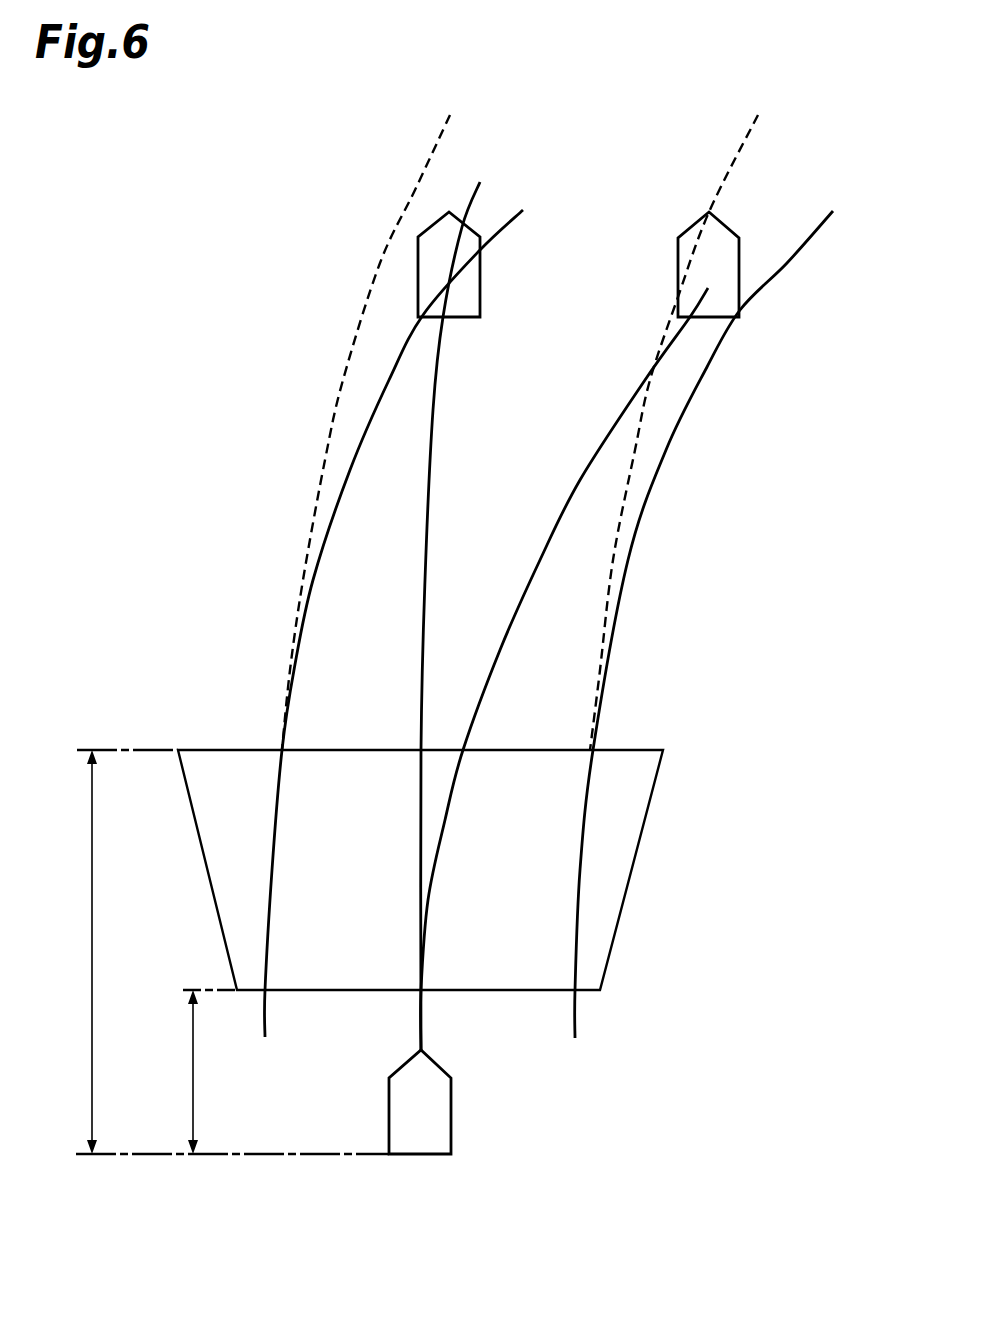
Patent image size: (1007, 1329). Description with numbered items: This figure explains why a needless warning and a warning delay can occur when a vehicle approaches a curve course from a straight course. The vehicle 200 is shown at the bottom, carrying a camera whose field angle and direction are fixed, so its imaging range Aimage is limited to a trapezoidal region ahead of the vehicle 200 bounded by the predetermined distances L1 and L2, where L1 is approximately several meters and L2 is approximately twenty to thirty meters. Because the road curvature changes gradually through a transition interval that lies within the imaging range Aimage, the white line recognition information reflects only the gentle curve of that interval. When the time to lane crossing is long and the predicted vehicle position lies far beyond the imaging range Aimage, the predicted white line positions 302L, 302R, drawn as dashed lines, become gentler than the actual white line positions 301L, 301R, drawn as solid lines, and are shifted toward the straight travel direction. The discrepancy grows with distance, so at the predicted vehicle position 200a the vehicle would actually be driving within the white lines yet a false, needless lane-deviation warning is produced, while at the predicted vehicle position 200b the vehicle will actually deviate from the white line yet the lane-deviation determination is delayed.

The vehicle 200 is at (452, 1106).
The predicted vehicle position 200a is at (740, 262).
The predicted vehicle position 200b is at (418, 258).
The actual white line position 301L is at (482, 248).
The actual white line position 301R is at (707, 368).
The predicted white line position 302L is at (323, 456).
The predicted white line position 302R is at (636, 447).
The imaging range Aimage is at (648, 812).
The near distance of imaging range L1 is at (210, 1072).
The far distance of imaging range L2 is at (232, 952).